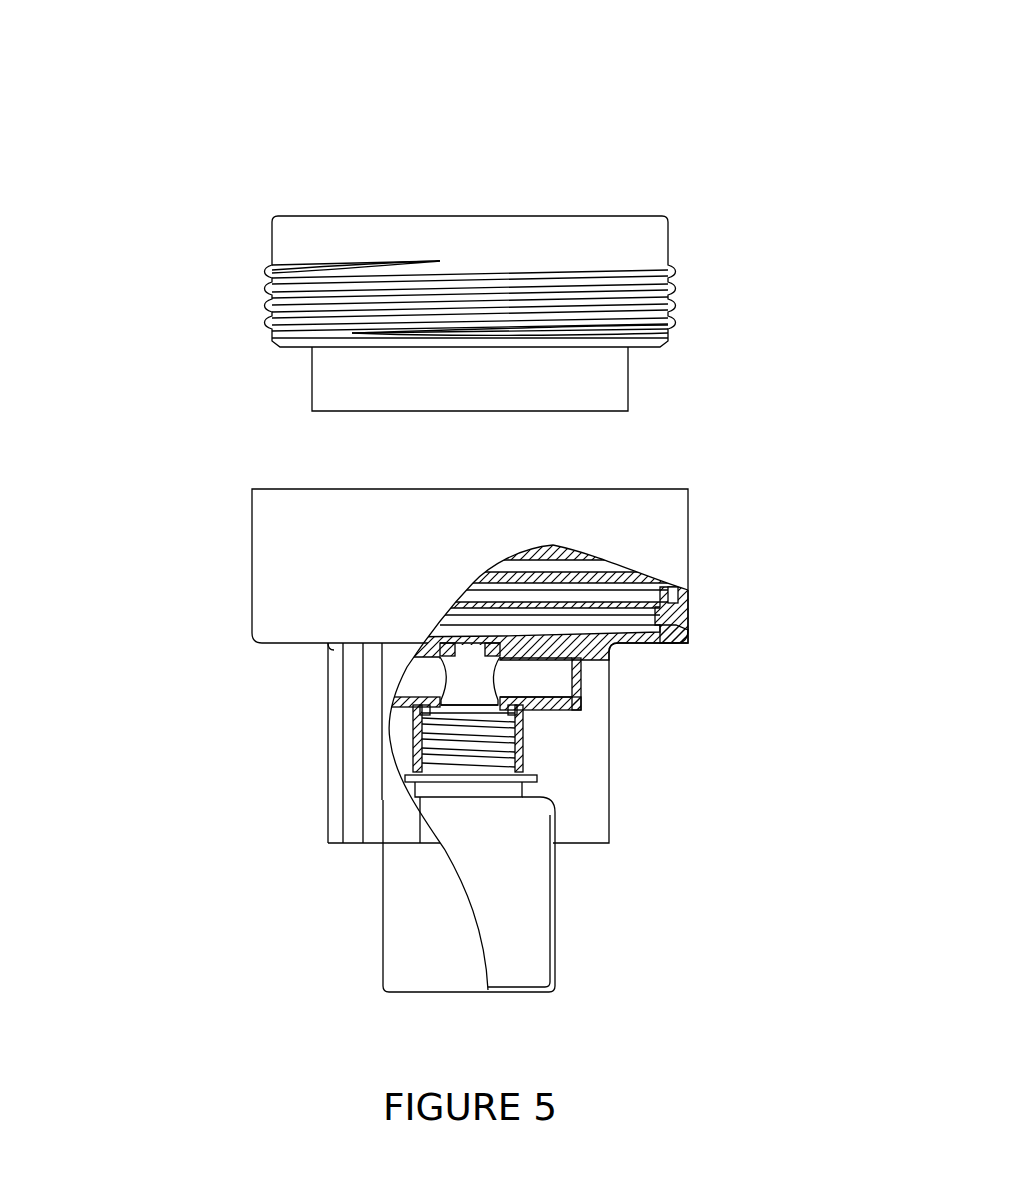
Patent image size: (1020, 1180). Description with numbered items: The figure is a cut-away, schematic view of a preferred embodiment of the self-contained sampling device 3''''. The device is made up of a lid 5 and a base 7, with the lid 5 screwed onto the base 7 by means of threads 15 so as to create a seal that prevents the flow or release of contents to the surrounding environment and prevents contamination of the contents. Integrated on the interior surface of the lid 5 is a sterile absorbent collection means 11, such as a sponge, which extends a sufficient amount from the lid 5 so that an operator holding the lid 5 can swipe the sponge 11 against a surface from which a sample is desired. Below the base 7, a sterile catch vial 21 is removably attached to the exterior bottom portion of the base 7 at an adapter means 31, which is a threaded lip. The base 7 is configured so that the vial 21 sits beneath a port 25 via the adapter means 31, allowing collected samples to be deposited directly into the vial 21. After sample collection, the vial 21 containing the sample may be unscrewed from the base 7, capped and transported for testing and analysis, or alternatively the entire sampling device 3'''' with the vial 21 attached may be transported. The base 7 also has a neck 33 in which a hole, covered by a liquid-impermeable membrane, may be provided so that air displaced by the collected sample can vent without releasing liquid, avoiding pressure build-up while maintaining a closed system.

The sampling device 3'''' is at (463, 503).
The lid 5 is at (582, 240).
The threads 15 is at (262, 297).
The sterile absorbent collection means 11 is at (560, 385).
The base 7 is at (305, 545).
The port 25 is at (455, 652).
The neck 33 is at (467, 683).
The adapter means 31 is at (530, 755).
The sterile catch vial 21 is at (512, 907).